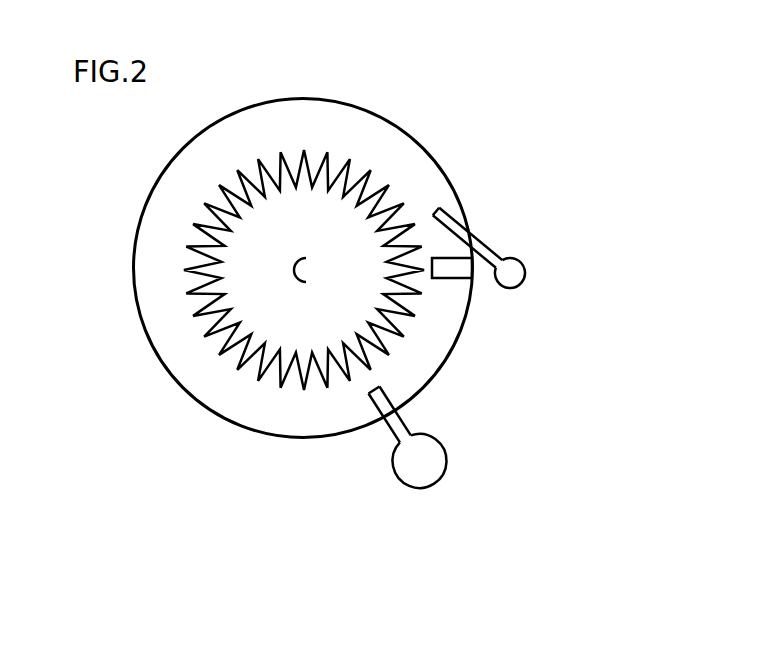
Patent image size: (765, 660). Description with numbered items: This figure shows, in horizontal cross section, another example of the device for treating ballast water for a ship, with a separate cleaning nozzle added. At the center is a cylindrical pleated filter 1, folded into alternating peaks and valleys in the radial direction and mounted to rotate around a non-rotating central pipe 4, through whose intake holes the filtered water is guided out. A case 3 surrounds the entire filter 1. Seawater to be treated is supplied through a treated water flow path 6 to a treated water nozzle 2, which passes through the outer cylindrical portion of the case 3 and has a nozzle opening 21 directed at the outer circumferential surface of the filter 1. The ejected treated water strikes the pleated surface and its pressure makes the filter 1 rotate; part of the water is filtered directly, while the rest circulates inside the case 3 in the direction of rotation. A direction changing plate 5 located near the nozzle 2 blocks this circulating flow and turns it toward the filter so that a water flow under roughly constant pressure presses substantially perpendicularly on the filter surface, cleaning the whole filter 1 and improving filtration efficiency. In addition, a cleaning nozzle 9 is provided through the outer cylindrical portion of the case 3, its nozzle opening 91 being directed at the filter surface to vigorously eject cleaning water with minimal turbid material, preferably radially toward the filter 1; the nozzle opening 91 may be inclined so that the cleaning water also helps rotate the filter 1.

The filter 1 is at (228, 340).
The treated water nozzles 2 is at (482, 242).
The nozzle opening 21 is at (431, 208).
The case 3 is at (167, 168).
The central pipe 4 is at (296, 283).
The direction changing plate 5 is at (452, 279).
The treated water flow path 6 is at (527, 272).
The cleaning nozzle 9 is at (405, 421).
The nozzle opening 91 is at (369, 389).